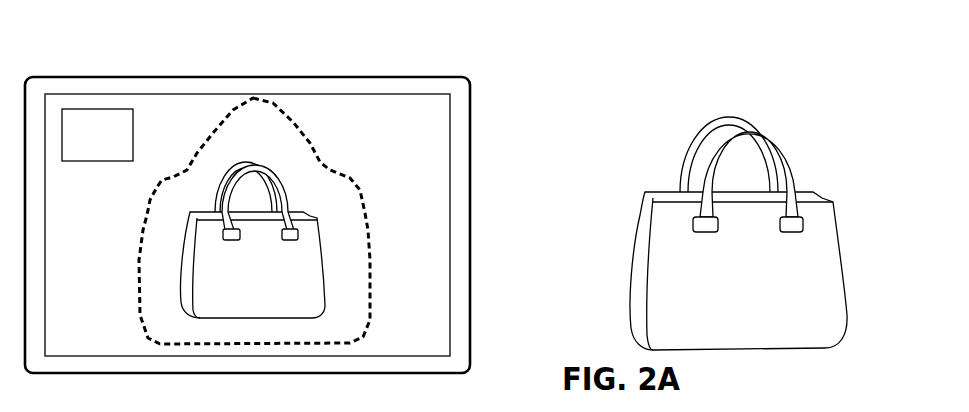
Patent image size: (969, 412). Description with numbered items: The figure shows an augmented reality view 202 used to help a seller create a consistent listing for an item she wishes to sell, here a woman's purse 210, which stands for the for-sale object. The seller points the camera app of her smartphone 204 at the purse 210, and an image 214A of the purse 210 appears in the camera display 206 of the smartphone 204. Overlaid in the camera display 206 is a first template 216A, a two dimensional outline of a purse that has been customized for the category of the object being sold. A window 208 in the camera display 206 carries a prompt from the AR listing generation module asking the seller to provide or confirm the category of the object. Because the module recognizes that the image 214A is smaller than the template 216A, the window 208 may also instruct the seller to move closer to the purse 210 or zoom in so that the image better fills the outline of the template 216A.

The electronic shelf label system 202 is at (922, 17).
The smartphone 204 is at (403, 77).
The camera display 206 is at (450, 183).
The window 208 is at (98, 112).
The purse 210 is at (842, 222).
The image 214A is at (180, 280).
The first template 216A is at (285, 143).